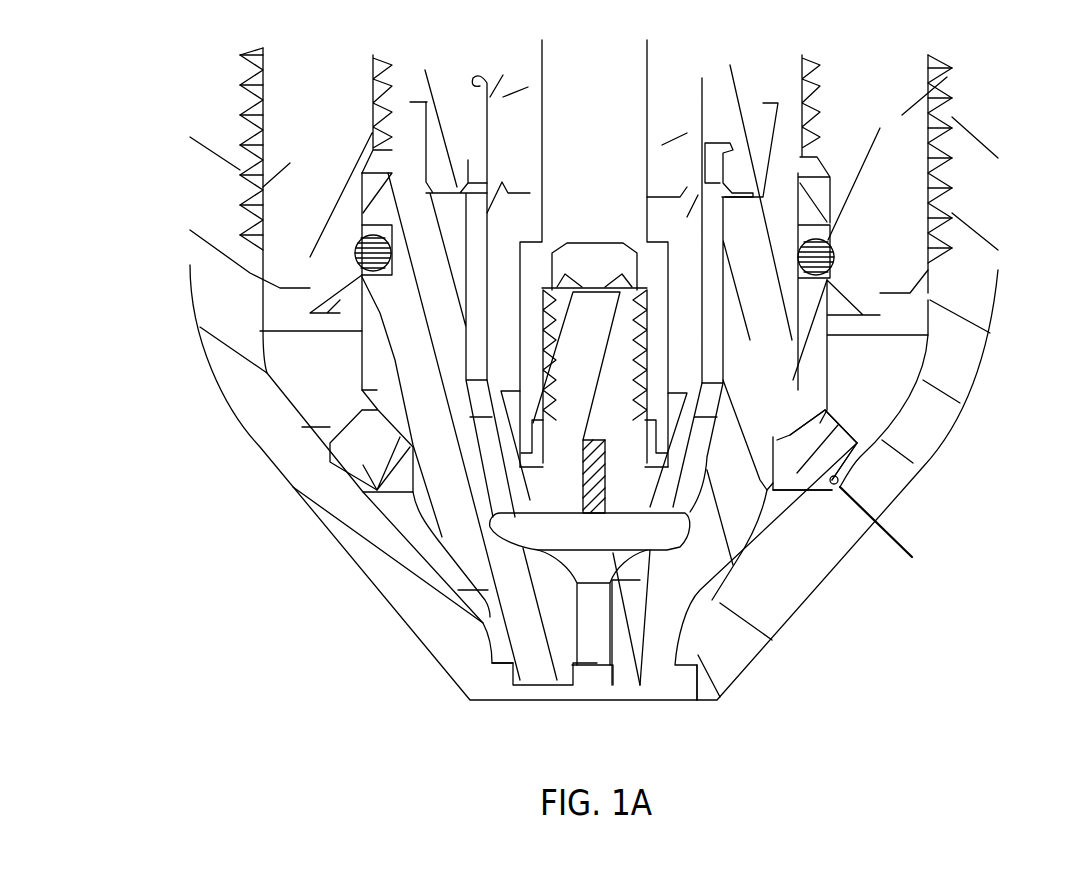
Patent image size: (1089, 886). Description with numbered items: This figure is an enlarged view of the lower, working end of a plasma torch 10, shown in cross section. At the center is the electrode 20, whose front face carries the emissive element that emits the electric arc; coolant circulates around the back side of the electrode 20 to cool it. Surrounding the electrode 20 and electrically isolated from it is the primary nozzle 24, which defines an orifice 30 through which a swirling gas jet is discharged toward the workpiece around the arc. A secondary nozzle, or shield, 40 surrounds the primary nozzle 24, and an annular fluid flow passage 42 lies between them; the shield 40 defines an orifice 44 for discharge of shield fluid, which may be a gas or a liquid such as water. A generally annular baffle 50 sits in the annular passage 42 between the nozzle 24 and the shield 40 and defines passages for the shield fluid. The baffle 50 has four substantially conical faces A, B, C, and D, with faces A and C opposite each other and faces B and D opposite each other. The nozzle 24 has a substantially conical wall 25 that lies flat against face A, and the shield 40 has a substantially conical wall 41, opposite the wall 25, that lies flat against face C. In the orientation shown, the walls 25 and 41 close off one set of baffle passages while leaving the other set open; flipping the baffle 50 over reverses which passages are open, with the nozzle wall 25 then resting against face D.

The plasma torch 10 is at (176, 212).
The electrode 20 is at (533, 492).
The primary nozzle 24 is at (377, 390).
The conical wall 25 is at (780, 435).
The orifice 30 is at (577, 675).
The secondary nozzle, or shield 40 is at (953, 382).
The conical wall 41 is at (891, 532).
The annular fluid flow passage 42 is at (322, 417).
The orifice 44 is at (690, 692).
The baffle 50 is at (370, 458).
The face A is at (793, 432).
The face B is at (838, 432).
The face C is at (838, 480).
The face D is at (792, 480).